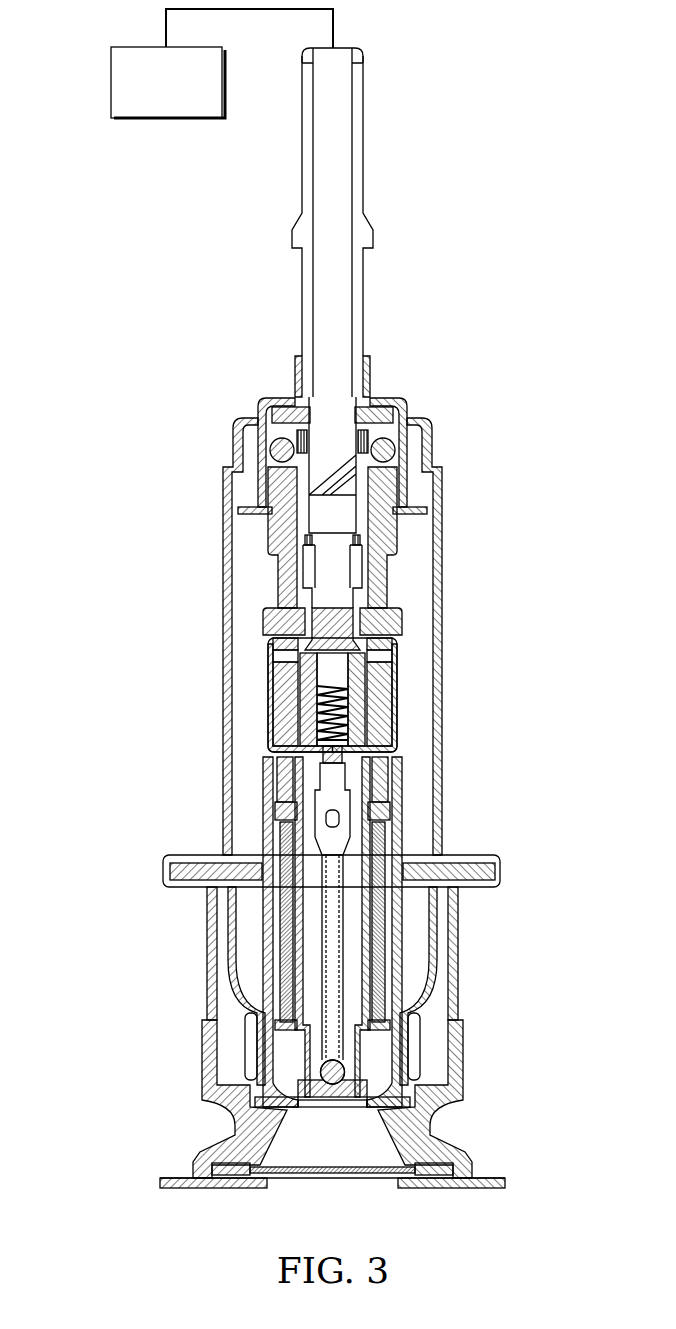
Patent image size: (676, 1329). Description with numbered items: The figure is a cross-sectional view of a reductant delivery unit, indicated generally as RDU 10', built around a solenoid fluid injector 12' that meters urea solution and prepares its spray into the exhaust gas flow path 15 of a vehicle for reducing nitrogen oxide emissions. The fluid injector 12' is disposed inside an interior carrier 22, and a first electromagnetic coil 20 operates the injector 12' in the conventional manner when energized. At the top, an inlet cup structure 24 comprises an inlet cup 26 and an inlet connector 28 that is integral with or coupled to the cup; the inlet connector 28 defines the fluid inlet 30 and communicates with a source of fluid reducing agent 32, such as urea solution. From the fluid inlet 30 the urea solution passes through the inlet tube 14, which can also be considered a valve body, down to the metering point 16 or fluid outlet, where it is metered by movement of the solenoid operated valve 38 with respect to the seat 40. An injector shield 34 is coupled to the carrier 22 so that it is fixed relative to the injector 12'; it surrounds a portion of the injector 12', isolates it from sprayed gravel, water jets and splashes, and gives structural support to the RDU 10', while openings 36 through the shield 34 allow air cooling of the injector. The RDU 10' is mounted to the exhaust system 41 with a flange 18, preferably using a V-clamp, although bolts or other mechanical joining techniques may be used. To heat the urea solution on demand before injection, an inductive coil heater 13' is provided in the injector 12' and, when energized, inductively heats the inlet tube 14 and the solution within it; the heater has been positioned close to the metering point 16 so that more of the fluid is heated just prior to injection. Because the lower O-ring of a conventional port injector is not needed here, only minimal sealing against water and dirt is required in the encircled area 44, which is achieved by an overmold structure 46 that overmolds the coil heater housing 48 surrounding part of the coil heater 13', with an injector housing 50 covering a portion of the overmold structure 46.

The RDU 10' is at (336, 630).
The solenoid fluid injector 12' is at (377, 629).
The inductive coil heater 13' is at (403, 809).
The inlet tube 14 is at (363, 913).
The exhaust gas flow path 15 is at (450, 1190).
The metering point 16 is at (332, 1084).
The flange 18 is at (452, 1057).
The first electromagnetic coil 20 is at (397, 690).
The interior carrier 22 is at (457, 970).
The inlet cup structure 24 is at (393, 383).
The inlet cup 26 is at (268, 405).
The inlet connector 28 is at (363, 213).
The fluid inlet 30 is at (358, 50).
The source of fluid reducing agent 32 is at (110, 80).
The injector shield 34 is at (418, 523).
The openings 36 is at (442, 565).
The solenoid operated valve 38 is at (332, 958).
The seat 40 is at (360, 1080).
The exhaust system 41 is at (213, 1190).
The encircled area 44 is at (245, 1040).
The overmold structure 46 is at (247, 1053).
The coil heater housing 48 is at (313, 988).
The injector housing 50 is at (257, 1013).